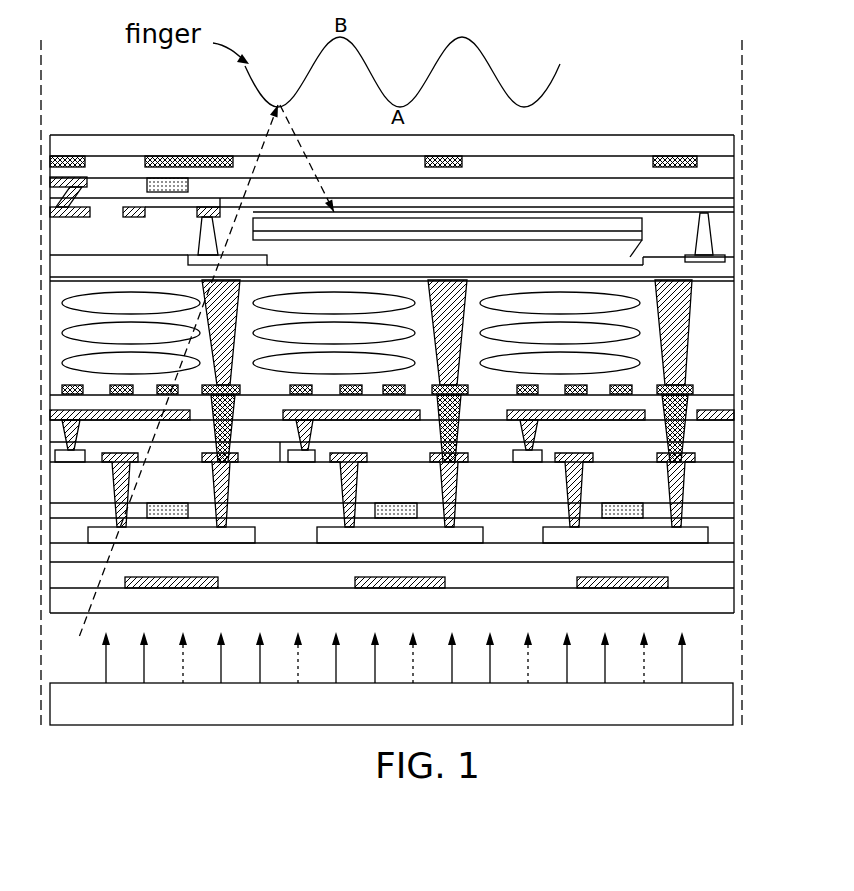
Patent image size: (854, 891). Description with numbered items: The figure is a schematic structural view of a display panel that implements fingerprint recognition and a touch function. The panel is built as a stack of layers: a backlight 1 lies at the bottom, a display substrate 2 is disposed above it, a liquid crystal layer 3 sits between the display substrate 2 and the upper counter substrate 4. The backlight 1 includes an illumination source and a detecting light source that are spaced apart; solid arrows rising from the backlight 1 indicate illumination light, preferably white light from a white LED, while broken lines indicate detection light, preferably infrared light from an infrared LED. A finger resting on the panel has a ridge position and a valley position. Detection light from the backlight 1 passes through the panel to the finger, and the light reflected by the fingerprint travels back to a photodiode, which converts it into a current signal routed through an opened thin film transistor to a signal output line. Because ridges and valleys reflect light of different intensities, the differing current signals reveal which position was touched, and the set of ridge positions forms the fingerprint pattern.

The backlight 1 is at (700, 703).
The display substrate 2 is at (748, 397).
The liquid crystal layer 3 is at (640, 362).
The counter substrate 4 is at (747, 277).